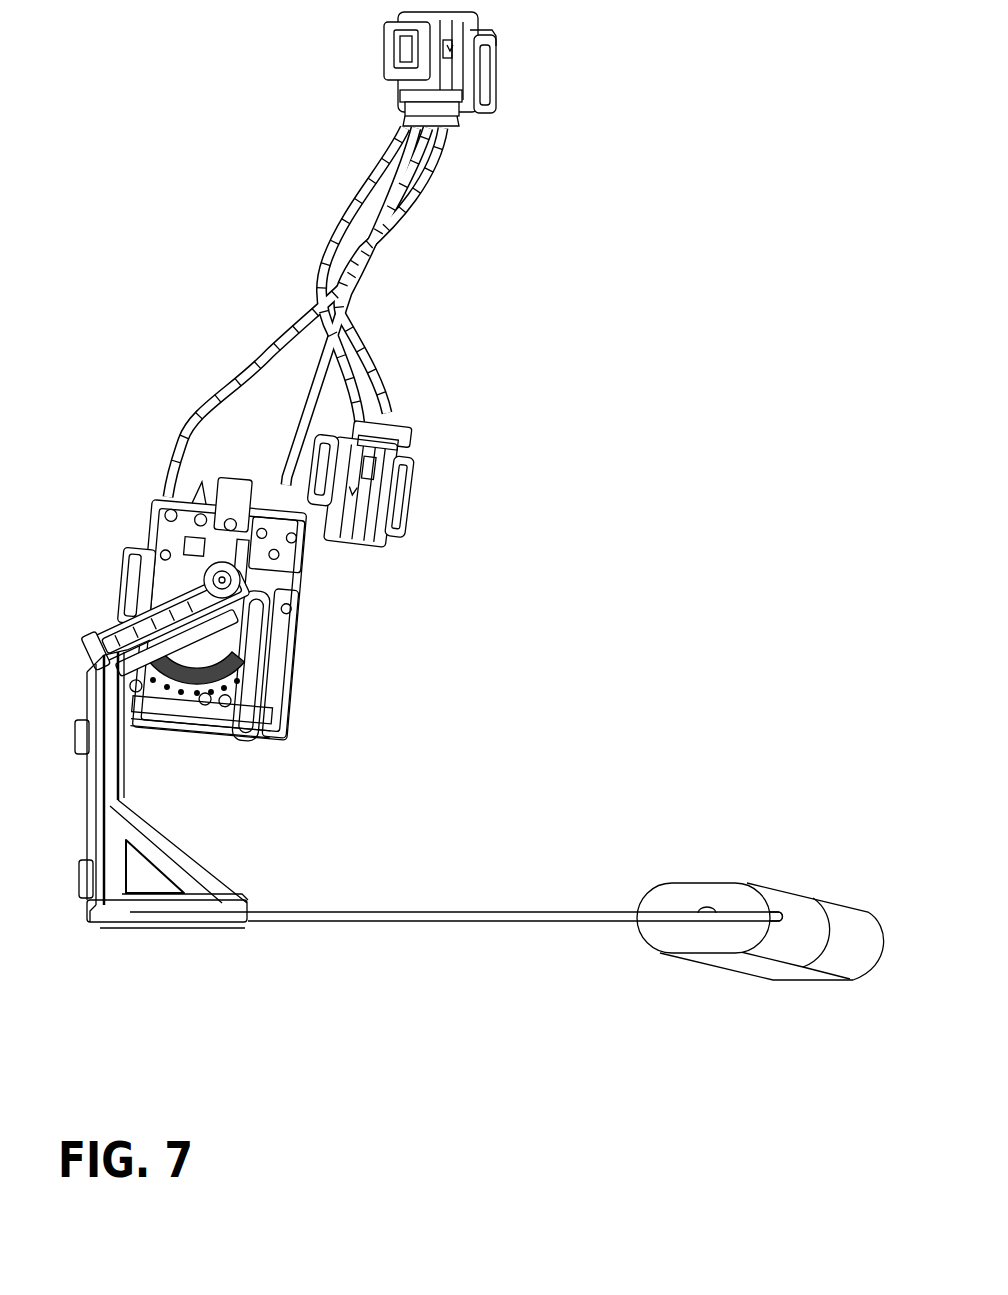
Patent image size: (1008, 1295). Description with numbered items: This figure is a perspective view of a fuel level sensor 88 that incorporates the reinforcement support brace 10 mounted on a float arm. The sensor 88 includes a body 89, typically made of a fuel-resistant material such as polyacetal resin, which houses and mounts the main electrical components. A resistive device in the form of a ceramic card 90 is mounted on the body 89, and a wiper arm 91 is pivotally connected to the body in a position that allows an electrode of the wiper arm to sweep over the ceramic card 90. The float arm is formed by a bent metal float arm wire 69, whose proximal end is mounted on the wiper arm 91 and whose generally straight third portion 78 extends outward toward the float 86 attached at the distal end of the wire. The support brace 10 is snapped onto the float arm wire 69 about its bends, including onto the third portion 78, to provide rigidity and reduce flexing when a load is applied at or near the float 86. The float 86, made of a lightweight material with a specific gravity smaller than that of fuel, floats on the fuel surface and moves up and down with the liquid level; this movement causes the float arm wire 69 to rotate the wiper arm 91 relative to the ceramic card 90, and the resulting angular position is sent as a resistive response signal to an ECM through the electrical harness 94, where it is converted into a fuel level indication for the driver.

The support brace 10 is at (172, 858).
The float arm wire 69 is at (515, 918).
The third portion 78 is at (513, 923).
The float 86 is at (830, 910).
The fuel level sensor 88 is at (258, 642).
The body 89 is at (312, 627).
The ceramic card 90 is at (188, 717).
The wiper arm 91 is at (167, 583).
The electrical harness 94 is at (490, 97).